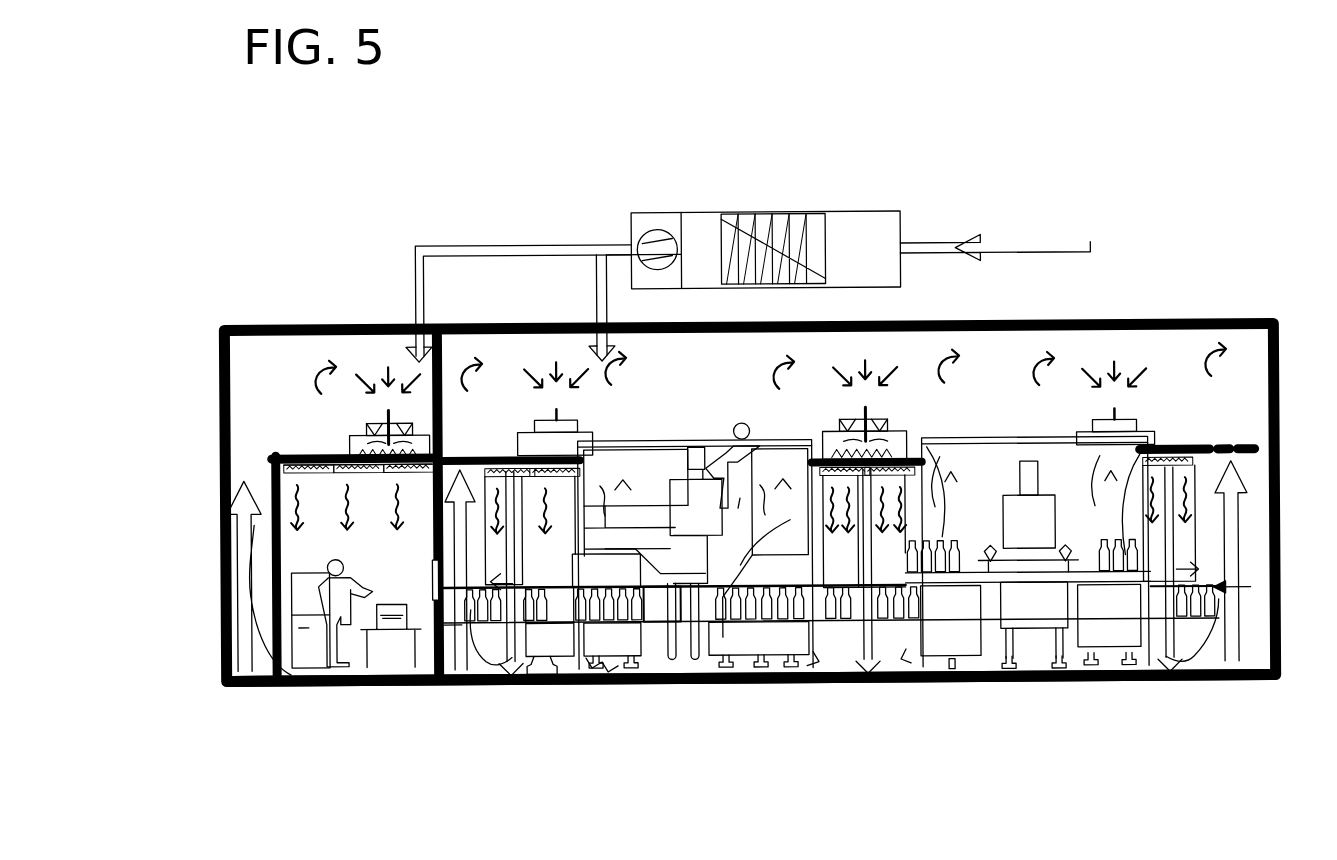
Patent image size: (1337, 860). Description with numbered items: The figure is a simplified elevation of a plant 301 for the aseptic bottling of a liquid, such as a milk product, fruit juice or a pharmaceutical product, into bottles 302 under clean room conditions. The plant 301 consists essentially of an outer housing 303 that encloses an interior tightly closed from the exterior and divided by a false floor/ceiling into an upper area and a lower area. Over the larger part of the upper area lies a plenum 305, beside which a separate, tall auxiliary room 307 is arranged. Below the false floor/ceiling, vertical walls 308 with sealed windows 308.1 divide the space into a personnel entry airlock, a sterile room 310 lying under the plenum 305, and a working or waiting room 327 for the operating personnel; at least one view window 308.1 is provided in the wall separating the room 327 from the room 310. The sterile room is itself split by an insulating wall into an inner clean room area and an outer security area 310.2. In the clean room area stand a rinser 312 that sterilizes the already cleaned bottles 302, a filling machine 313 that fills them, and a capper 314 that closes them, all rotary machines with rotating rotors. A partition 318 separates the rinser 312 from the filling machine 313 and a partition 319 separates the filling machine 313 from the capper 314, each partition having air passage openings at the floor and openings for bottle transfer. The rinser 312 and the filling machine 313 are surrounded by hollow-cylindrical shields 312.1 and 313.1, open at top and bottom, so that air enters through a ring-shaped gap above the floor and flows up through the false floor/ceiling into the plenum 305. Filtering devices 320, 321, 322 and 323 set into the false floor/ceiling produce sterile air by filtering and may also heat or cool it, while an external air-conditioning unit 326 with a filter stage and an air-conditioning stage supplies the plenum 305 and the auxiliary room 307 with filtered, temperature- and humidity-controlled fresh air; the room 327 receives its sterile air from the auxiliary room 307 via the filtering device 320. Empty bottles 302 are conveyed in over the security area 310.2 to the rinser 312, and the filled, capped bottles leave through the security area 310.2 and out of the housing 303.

The plant 301 is at (1183, 174).
The bottles 302 is at (1226, 676).
The outer housing 303 is at (1085, 324).
The plenum 305 is at (716, 394).
The auxiliary room 307 is at (292, 411).
The vertical walls 308 is at (444, 485).
The sealed windows 308.1 is at (441, 596).
The room 310 is at (556, 662).
The outer security area 310.2 is at (474, 680).
The rinser 312 is at (1030, 690).
The shield wall of rinser 312.1 is at (1105, 640).
The filling machine 313 is at (712, 660).
The shield wall of filling machine 313.1 is at (785, 660).
The capper 314 is at (590, 662).
The partition 318 is at (888, 690).
The partition 319 is at (637, 665).
The filtering device 320 is at (418, 436).
The filtering device 321 is at (576, 426).
The filtering device 322 is at (886, 428).
The filtering device 323 is at (1135, 423).
The external air-conditioning unit 326 is at (846, 215).
The working or waiting room 327 is at (390, 561).